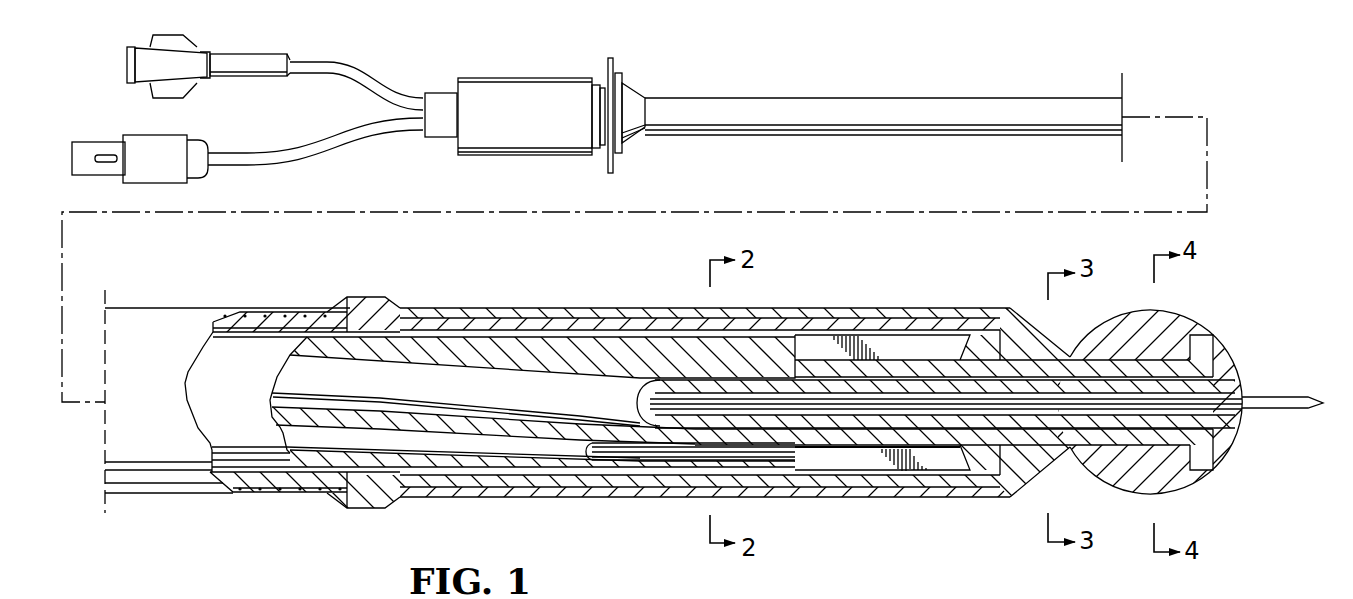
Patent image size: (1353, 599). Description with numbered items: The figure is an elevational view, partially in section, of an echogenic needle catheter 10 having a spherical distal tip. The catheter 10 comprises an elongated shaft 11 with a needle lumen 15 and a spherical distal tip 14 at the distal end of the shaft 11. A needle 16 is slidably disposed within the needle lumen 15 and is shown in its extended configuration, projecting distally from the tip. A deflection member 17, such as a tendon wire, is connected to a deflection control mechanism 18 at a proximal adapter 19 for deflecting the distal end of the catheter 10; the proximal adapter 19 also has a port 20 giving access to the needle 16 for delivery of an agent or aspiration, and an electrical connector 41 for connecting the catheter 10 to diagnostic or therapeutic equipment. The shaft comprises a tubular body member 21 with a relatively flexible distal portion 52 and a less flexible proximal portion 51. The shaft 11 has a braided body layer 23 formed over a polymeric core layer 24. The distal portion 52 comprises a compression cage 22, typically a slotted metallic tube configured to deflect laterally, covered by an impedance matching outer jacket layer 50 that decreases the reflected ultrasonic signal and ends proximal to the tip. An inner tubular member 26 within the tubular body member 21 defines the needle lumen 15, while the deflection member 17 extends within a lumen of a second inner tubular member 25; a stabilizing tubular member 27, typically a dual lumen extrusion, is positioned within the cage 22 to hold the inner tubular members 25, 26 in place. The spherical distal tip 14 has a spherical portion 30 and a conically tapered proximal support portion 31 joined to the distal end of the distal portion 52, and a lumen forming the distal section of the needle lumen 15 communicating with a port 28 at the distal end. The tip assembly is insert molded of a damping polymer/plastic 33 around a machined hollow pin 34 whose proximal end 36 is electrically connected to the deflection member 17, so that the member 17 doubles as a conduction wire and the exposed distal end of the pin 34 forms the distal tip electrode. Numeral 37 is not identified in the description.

The needle catheter 10 is at (1260, 130).
The elongated shaft 11 is at (862, 98).
The spherical distal tip 14 is at (1188, 315).
The needle lumen 15 is at (1184, 393).
The needle 16 is at (1263, 395).
The deflection member 17 is at (857, 457).
The deflection control mechanism 18 is at (618, 160).
The proximal adapter 19 is at (458, 82).
The port 20 is at (128, 68).
The tubular body member 21 is at (988, 137).
The compression cage 22 is at (551, 484).
The braided body layer 23 is at (260, 310).
The polymeric core layer 24 is at (296, 316).
The second inner tubular member 25 is at (339, 440).
The inner tubular member 26 is at (545, 393).
The stabilizing tubular member 27 is at (439, 345).
The port 28 is at (1244, 412).
The spherical portion 30 is at (1192, 491).
The proximal support portion 31 is at (1042, 474).
The polymer/plastic 33 is at (1118, 327).
The machined hollow pin 34 is at (1215, 448).
The proximal end of the pin 36 is at (796, 455).
The coil 37 is at (950, 463).
The electrical connector 41 is at (97, 140).
The outer jacket layer 50 is at (789, 308).
The proximal portion 51 is at (171, 303).
The distal portion 52 is at (533, 303).